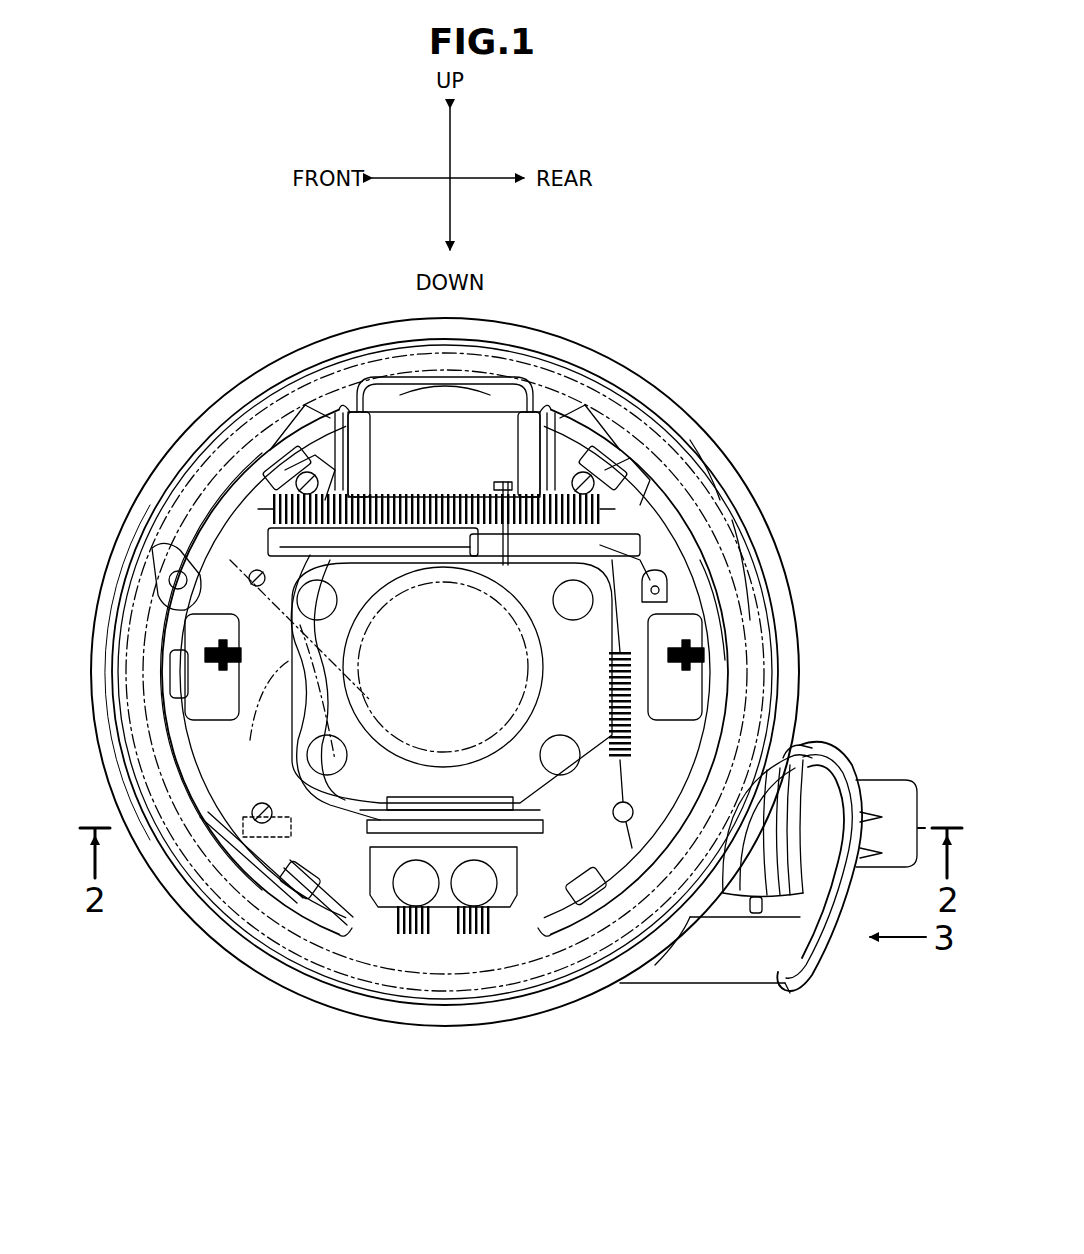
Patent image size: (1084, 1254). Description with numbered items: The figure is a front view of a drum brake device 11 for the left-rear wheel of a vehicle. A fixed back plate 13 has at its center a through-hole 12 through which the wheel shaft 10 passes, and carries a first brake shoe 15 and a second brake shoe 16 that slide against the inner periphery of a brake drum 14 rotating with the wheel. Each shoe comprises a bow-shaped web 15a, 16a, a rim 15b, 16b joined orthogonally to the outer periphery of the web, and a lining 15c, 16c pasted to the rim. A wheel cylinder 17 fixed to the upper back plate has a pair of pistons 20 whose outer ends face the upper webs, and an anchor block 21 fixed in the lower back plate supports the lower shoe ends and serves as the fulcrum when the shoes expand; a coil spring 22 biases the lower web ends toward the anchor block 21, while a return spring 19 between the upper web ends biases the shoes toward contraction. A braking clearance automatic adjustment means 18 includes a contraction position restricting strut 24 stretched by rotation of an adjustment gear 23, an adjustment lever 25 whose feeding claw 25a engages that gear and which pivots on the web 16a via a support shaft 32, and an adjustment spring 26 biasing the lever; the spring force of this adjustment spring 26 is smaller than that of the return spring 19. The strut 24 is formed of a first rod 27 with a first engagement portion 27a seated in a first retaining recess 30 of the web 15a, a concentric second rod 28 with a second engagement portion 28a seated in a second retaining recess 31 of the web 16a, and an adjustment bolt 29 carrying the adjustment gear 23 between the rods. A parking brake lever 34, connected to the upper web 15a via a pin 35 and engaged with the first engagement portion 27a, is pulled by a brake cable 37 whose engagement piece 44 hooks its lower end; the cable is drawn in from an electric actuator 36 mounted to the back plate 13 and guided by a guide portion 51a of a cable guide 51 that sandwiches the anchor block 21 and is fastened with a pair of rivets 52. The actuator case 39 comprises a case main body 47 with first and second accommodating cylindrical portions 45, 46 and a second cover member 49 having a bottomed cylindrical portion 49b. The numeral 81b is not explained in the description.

The wheel shaft 10 is at (526, 672).
The drum brake device 11 is at (365, 1028).
The through-hole 12 is at (388, 760).
The back plate 13 is at (793, 690).
The brake drum 14 is at (650, 392).
The first brake shoe 15 is at (222, 484).
The web 15a is at (235, 565).
The rim 15b is at (172, 600).
The lining 15c is at (150, 645).
The second brake shoe 16 is at (742, 660).
The web 16a is at (688, 606).
The rim 16b is at (742, 532).
The lining 16c is at (722, 502).
The wheel cylinder 17 is at (492, 410).
The braking clearance automatic adjustment means 18 is at (650, 578).
The return spring 19 is at (405, 490).
The pistons 20 is at (313, 398).
The anchor block 21 is at (562, 905).
The coil spring 22 is at (472, 890).
The adjustment gear 23 is at (503, 545).
The contraction position restricting strut 24 is at (398, 562).
The adjustment lever 25 is at (577, 540).
The feeding claw 25a is at (502, 492).
The adjustment spring 26 is at (607, 696).
The first rod 27 is at (390, 540).
The first engagement portion 27a is at (312, 692).
The second rod 28 is at (578, 540).
The second engagement portion 28a is at (660, 446).
The adjustment bolt 29 is at (480, 590).
The first retaining recess 30 is at (249, 581).
The second retaining recess 31 is at (646, 580).
The support shaft 32 is at (672, 600).
The parking brake lever 34 is at (265, 730).
The pin 35 is at (308, 460).
The electric actuator 36 is at (735, 985).
The brake cable 37 is at (482, 823).
The actuator case 39 is at (810, 988).
The engagement piece 44 is at (265, 858).
The first accommodating cylindrical portion 45 is at (715, 965).
The second accommodating cylindrical portion 46 is at (815, 750).
The case main body 47 is at (830, 955).
The second cover member 49 is at (845, 908).
The bottomed cylindrical portion 49b is at (895, 795).
The cable guide 51 is at (305, 915).
The guide portion 51a is at (422, 808).
The rivets 52 is at (417, 890).
The cable end 81b is at (388, 832).